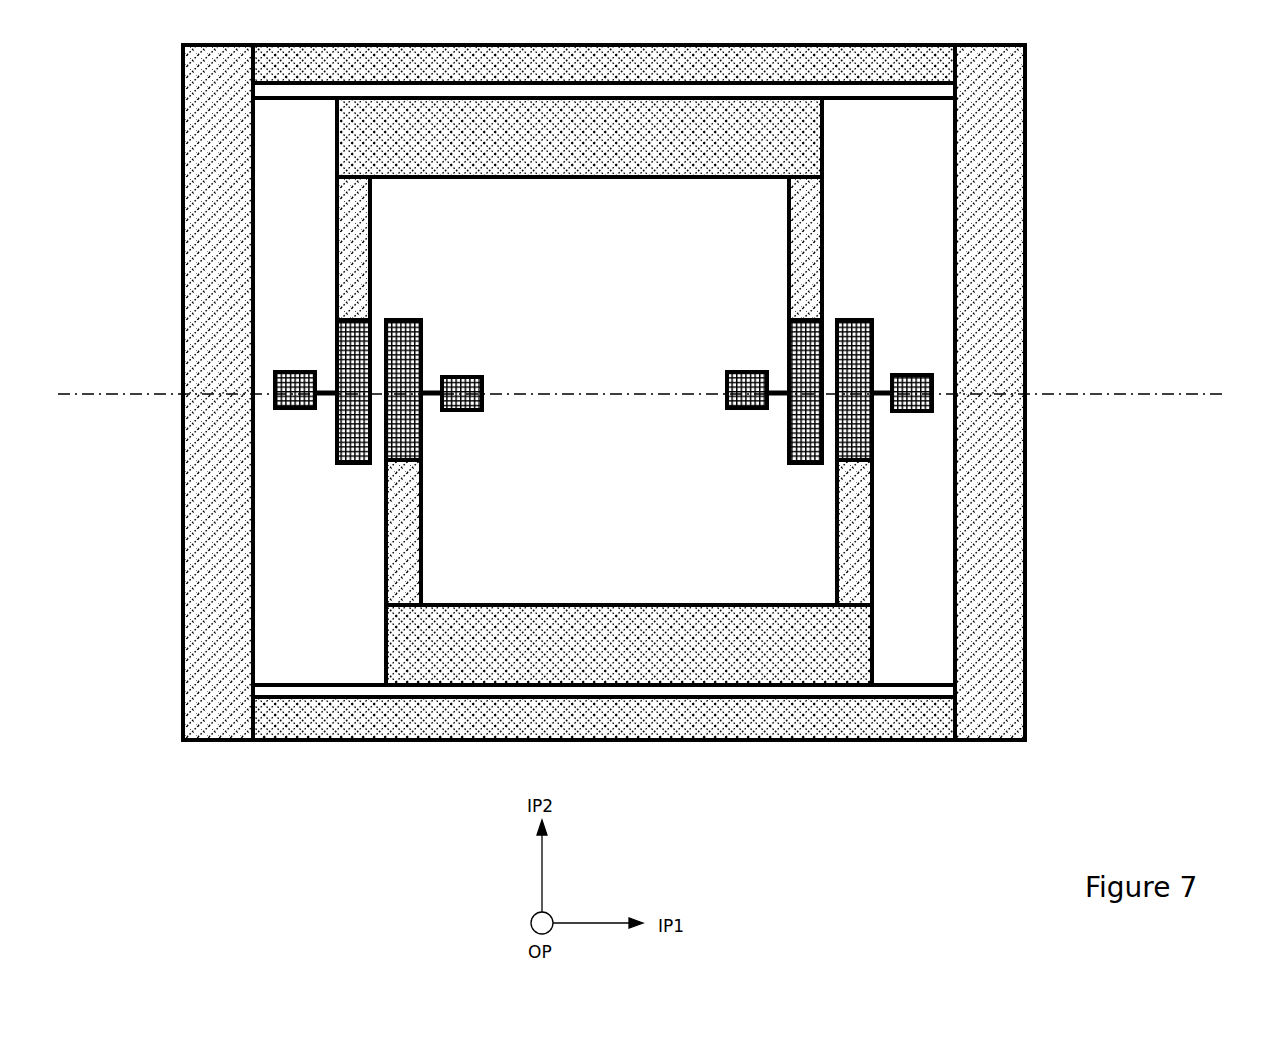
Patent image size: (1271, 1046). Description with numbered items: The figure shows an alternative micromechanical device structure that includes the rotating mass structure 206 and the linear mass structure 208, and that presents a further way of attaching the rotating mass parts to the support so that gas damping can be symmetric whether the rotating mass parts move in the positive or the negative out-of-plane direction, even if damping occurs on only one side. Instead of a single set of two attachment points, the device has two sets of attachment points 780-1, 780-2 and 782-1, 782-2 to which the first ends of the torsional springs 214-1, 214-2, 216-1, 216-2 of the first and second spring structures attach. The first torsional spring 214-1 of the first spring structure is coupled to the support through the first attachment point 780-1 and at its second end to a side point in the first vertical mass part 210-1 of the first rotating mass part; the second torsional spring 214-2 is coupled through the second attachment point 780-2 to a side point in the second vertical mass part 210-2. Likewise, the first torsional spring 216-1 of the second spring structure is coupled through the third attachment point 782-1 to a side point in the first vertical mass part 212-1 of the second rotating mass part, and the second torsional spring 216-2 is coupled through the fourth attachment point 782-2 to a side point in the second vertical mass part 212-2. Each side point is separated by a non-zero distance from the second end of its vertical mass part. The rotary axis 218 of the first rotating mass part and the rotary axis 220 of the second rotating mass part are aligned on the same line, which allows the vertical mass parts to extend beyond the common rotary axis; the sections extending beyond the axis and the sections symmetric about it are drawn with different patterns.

The rotating mass structure 206 is at (637, 209).
The linear mass structure 208 is at (1015, 655).
The first vertical mass part of the first rotating mass part 210-1 is at (802, 278).
The second vertical mass part of the first rotating mass part 210-2 is at (358, 268).
The first vertical mass part of the second rotating mass part 212-1 is at (838, 577).
The second vertical mass part of the second rotating mass part 212-2 is at (408, 585).
The first torsional spring of the first spring structure 214-1 is at (773, 388).
The second torsional spring of the first spring structure 214-2 is at (327, 388).
The first torsional spring of the second spring structure 216-1 is at (890, 405).
The second torsional spring of the second spring structure 216-2 is at (422, 405).
The rotary axis of the first rotating mass part 218 is at (653, 354).
The rotary axis of the second rotating mass part 220 is at (1083, 390).
The first attachment point 780-1 is at (745, 408).
The second attachment point 780-2 is at (287, 405).
The third attachment point 782-1 is at (915, 375).
The fourth attachment point 782-2 is at (480, 370).